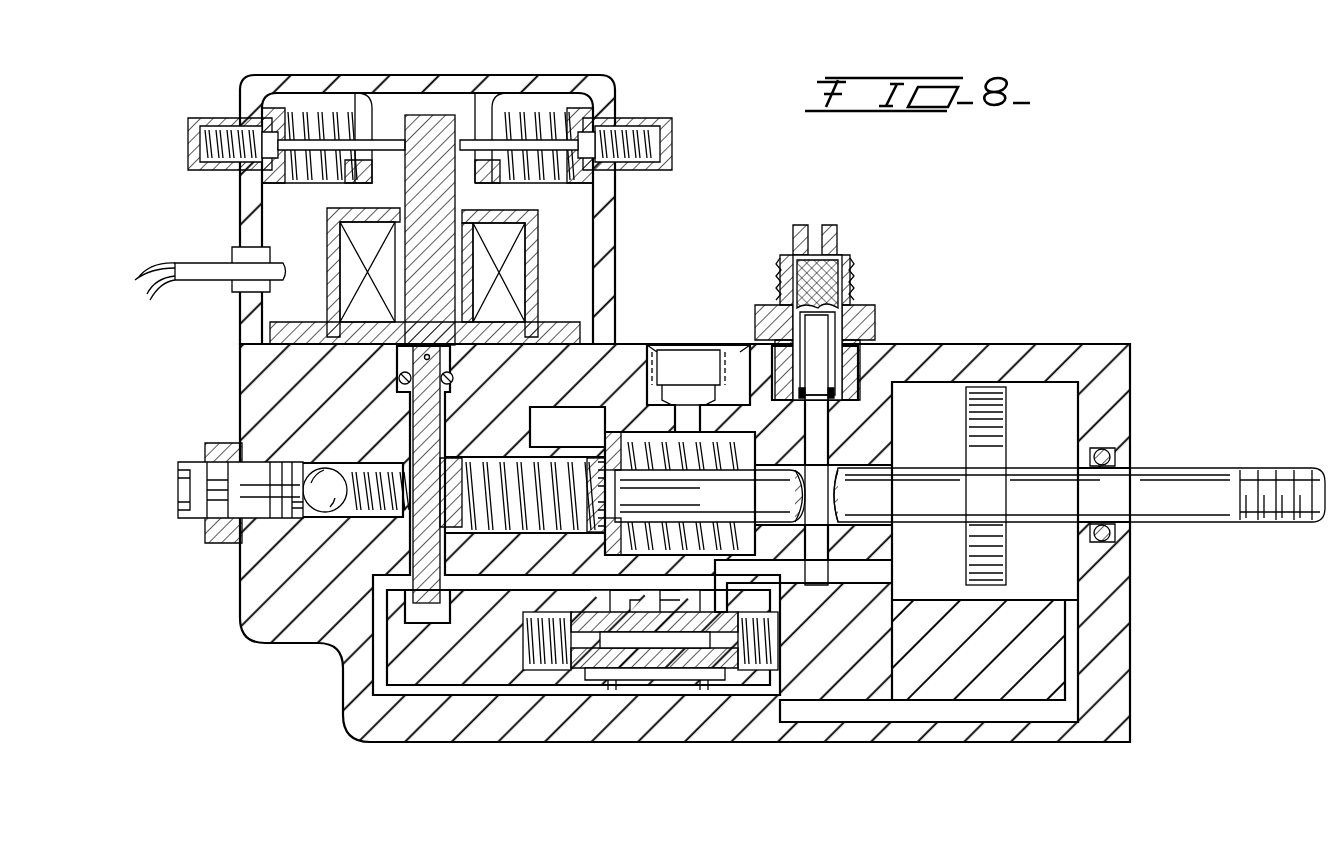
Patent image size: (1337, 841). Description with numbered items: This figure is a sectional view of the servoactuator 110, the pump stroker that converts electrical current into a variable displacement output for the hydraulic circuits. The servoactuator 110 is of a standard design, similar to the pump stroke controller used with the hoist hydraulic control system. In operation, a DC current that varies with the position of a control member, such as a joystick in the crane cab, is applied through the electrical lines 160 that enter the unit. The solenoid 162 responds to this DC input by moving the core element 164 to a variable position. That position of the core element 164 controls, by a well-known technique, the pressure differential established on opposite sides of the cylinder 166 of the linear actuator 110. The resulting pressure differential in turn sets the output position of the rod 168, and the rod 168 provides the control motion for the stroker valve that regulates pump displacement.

The servoactuator 110 is at (941, 309).
The electrical lines 160 is at (205, 262).
The solenoid 162 is at (501, 254).
The core element 164 is at (440, 115).
The cylinder 166 is at (940, 395).
The rod 168 is at (1165, 470).